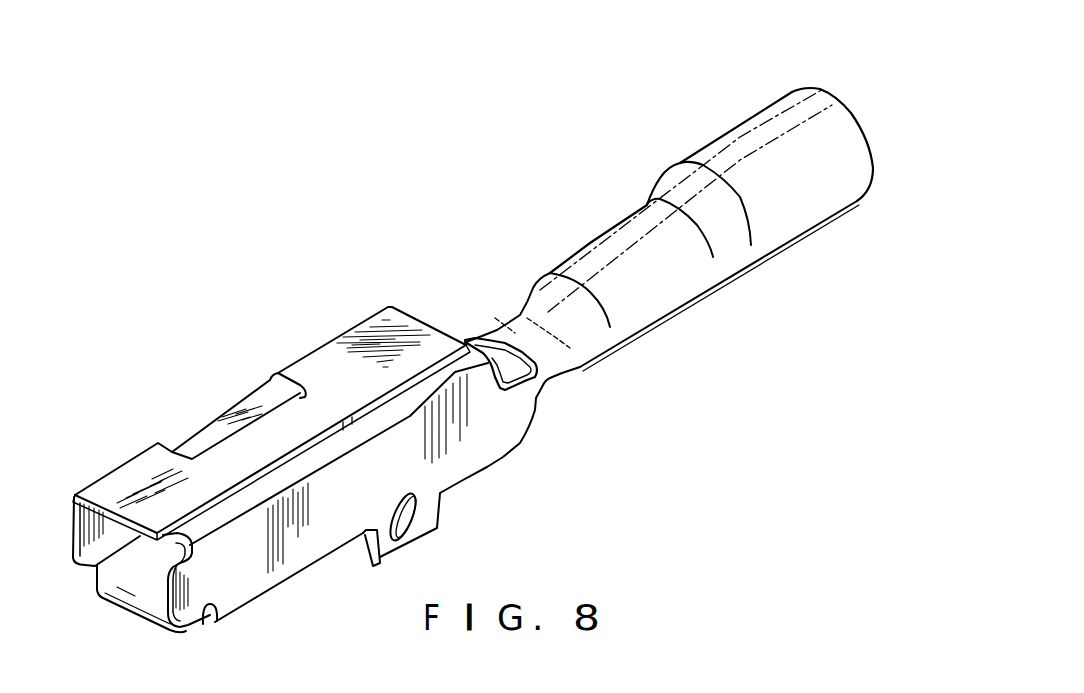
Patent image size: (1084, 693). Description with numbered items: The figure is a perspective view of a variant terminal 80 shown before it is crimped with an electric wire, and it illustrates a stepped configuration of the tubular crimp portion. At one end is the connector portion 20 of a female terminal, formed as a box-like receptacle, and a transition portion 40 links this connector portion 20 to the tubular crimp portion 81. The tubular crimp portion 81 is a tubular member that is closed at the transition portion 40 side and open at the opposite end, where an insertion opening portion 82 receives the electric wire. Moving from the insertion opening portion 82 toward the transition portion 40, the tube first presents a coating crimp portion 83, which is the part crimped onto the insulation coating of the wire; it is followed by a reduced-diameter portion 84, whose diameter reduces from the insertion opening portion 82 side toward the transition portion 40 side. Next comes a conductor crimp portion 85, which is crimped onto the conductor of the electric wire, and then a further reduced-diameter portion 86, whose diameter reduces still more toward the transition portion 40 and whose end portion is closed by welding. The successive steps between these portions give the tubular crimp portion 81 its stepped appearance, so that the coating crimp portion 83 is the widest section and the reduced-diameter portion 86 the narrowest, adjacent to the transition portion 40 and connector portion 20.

The connector portion 20 is at (298, 352).
The transition portion 40 is at (466, 344).
The terminal 80 is at (617, 433).
The tubular crimp portion 81 is at (753, 110).
The insertion opening portion 82 is at (847, 113).
The coating crimp portion 83 is at (707, 143).
The reduced-diameter portion 84 is at (657, 183).
The conductor crimp portion 85 is at (577, 260).
The reduced-diameter portion 86 is at (523, 310).